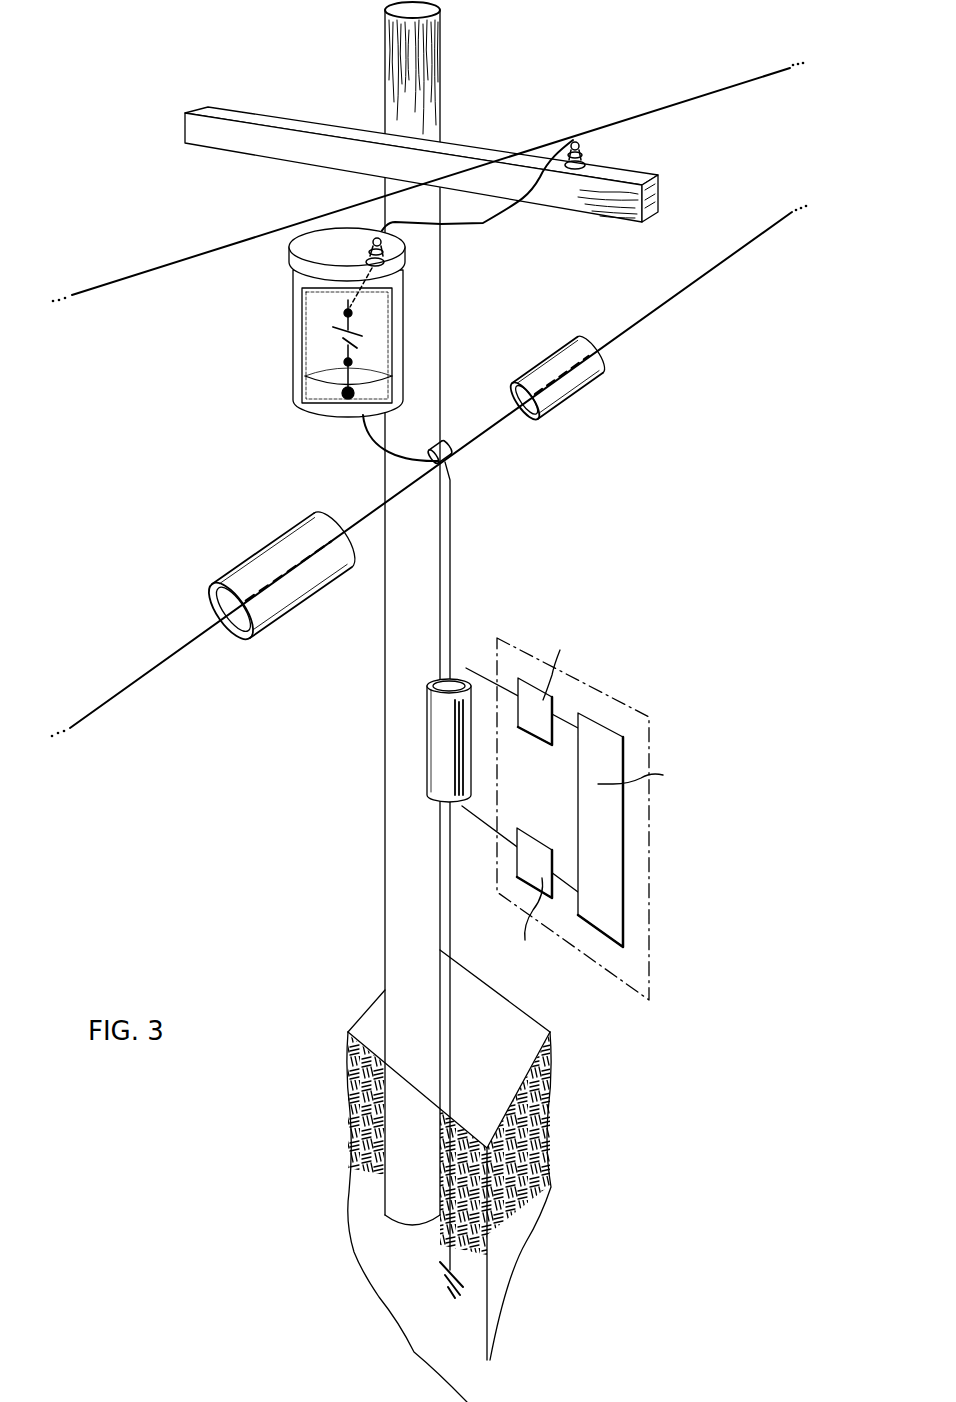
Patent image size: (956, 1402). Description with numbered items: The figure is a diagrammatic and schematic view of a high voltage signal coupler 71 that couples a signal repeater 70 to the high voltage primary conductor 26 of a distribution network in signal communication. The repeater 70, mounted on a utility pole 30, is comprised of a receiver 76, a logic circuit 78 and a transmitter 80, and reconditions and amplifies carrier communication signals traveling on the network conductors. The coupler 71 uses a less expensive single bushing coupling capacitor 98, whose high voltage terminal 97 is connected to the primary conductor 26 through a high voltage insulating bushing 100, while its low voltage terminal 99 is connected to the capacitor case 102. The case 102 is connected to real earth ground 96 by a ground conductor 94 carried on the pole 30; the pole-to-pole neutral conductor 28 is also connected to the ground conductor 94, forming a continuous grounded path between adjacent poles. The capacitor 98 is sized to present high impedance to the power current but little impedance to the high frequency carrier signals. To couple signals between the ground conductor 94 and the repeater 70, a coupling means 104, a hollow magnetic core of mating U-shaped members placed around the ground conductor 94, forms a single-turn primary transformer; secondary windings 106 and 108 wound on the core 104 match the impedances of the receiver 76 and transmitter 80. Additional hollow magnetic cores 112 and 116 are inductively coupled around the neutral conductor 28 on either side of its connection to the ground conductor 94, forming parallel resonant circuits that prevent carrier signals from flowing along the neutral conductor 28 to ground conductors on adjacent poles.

The primary conductor 26 is at (103, 283).
The neutral conductor 28 is at (88, 708).
The utility pole 30 is at (386, 852).
The signal repeater 70 is at (650, 827).
The high voltage signal coupler 71 is at (545, 534).
The receiver 76 is at (517, 899).
The logic circuit 78 is at (647, 830).
The transmitter 80 is at (594, 688).
The ground conductor 94 is at (452, 538).
The real earth ground 96 is at (453, 1270).
The high voltage terminal 97 is at (345, 313).
The single bushing coupling capacitor 98 is at (345, 333).
The low voltage terminal 99 is at (351, 362).
The high voltage insulating bushing 100 is at (367, 248).
The capacitor case 102 is at (292, 387).
The coupling means 104 is at (433, 753).
The secondary winding 106 is at (478, 675).
The secondary winding 108 is at (482, 828).
The hollow magnetic core 112 is at (263, 562).
The hollow magnetic core 116 is at (575, 385).